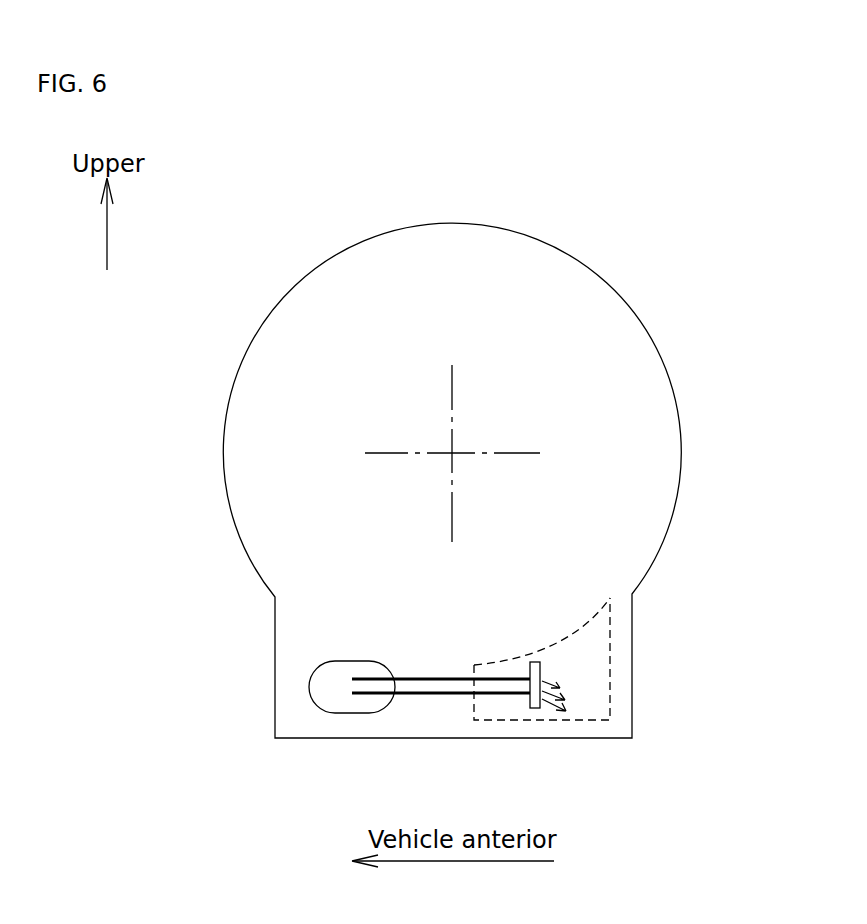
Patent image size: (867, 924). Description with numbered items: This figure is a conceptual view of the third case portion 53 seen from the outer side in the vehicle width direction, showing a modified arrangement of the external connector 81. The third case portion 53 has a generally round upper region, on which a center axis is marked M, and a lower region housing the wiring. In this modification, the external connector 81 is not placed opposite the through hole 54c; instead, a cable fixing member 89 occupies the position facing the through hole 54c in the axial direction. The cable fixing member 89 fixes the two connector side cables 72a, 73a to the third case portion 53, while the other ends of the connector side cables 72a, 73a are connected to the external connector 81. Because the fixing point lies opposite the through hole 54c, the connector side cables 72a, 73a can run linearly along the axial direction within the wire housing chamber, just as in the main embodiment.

The third case portion 53 is at (568, 254).
The optical axis / center M is at (452, 453).
The external connector 81 is at (350, 713).
The connector side cable 72a is at (410, 694).
The connector side cable 73a is at (458, 680).
The through hole 54c is at (610, 637).
The cable fixing member 89 is at (540, 668).